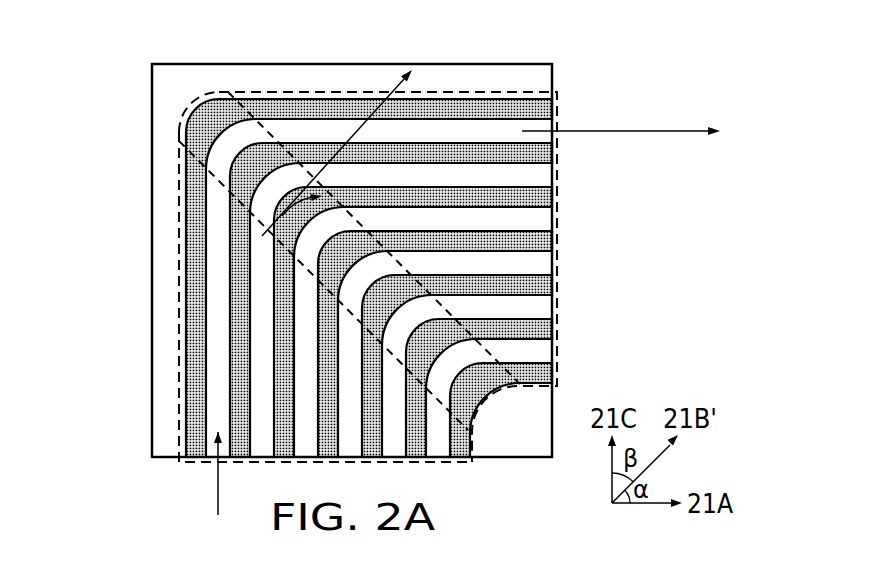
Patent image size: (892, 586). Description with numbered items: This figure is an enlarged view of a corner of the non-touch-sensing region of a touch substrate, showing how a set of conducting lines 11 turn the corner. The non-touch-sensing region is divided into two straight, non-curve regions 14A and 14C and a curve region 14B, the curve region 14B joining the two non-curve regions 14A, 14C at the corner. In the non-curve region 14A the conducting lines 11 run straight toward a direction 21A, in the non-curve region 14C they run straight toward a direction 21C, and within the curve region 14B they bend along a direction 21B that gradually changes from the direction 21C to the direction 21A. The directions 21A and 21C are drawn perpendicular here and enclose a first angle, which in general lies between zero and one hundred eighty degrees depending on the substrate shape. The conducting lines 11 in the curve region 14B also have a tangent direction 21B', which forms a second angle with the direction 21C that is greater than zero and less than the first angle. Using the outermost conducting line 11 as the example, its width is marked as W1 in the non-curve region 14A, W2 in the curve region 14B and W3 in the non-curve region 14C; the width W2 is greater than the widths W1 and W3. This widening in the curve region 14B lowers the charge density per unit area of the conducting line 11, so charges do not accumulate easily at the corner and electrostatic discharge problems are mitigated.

The conducting line 11 is at (540, 108).
The non-curve region 14A is at (448, 90).
The curve region 14B is at (180, 127).
The non-curve region 14C is at (179, 306).
The direction 21A is at (621, 121).
The direction 21B is at (300, 111).
The tangent direction 21B' is at (337, 121).
The direction 21C is at (192, 473).
The width W1 is at (500, 157).
The width W2 is at (248, 154).
The width W3 is at (242, 390).